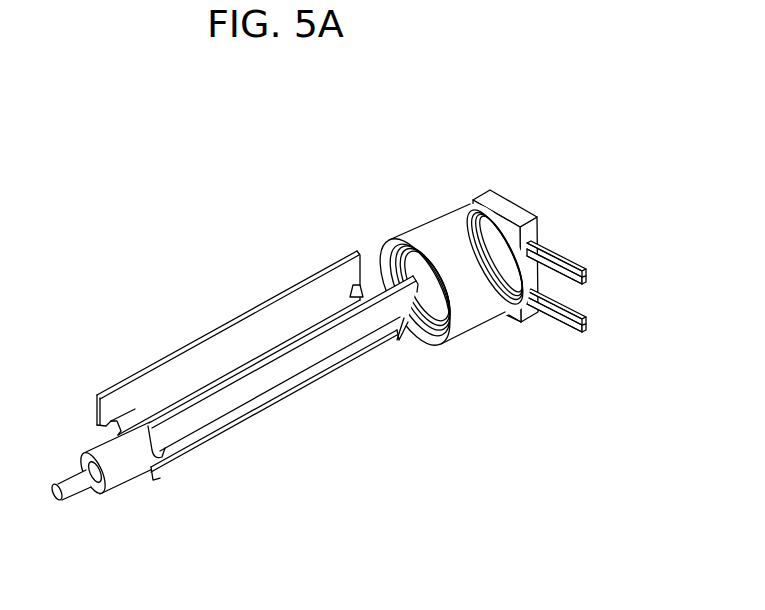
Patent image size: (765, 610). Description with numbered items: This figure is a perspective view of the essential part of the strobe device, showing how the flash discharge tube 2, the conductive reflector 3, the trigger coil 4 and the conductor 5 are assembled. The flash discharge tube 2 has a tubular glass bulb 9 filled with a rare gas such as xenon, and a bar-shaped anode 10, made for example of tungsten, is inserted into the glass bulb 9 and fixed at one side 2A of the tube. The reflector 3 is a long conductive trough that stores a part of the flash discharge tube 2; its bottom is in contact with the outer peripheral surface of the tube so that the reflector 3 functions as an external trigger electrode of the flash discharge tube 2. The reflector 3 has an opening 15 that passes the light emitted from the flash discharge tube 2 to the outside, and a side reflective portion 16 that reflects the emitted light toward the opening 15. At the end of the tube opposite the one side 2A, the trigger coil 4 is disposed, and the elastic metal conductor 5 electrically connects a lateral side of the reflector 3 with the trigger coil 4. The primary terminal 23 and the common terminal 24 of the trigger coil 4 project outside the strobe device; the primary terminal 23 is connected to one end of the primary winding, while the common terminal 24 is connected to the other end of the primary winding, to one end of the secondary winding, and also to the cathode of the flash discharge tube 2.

The flash discharge tube 2 is at (129, 483).
The one side 2A is at (117, 468).
The conductive reflector 3 is at (277, 245).
The trigger coil 4 is at (414, 202).
The conductor 5 is at (377, 270).
The glass bulb 9 is at (133, 441).
The anode 10 is at (73, 489).
The opening 15 is at (240, 342).
The side reflective portion 16 is at (266, 298).
The primary terminal 23 is at (590, 277).
The common terminal 24 is at (591, 331).